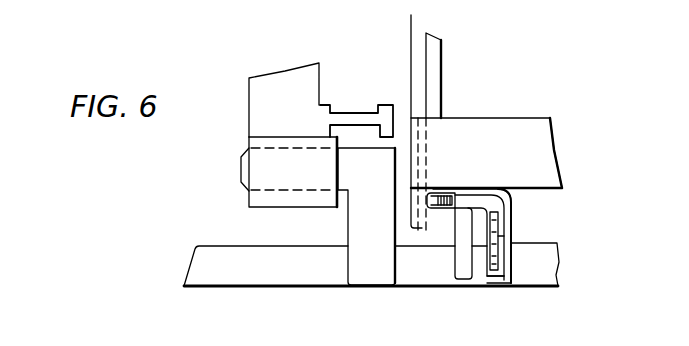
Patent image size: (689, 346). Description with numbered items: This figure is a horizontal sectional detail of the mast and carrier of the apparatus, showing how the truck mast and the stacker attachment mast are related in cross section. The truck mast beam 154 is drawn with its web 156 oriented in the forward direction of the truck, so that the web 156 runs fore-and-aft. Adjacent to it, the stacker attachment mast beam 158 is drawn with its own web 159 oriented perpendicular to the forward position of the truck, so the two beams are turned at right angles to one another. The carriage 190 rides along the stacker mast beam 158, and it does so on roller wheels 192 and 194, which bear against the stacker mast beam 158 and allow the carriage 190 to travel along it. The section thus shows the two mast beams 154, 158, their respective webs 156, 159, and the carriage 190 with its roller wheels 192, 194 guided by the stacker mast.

The truck mast beam 154 is at (380, 128).
The web 156 is at (370, 102).
The stacker attachment mast beam 158 is at (490, 285).
The web 159 is at (470, 258).
The carriage 190 is at (512, 209).
The roller wheel 192 is at (439, 209).
The roller wheel 194 is at (499, 231).